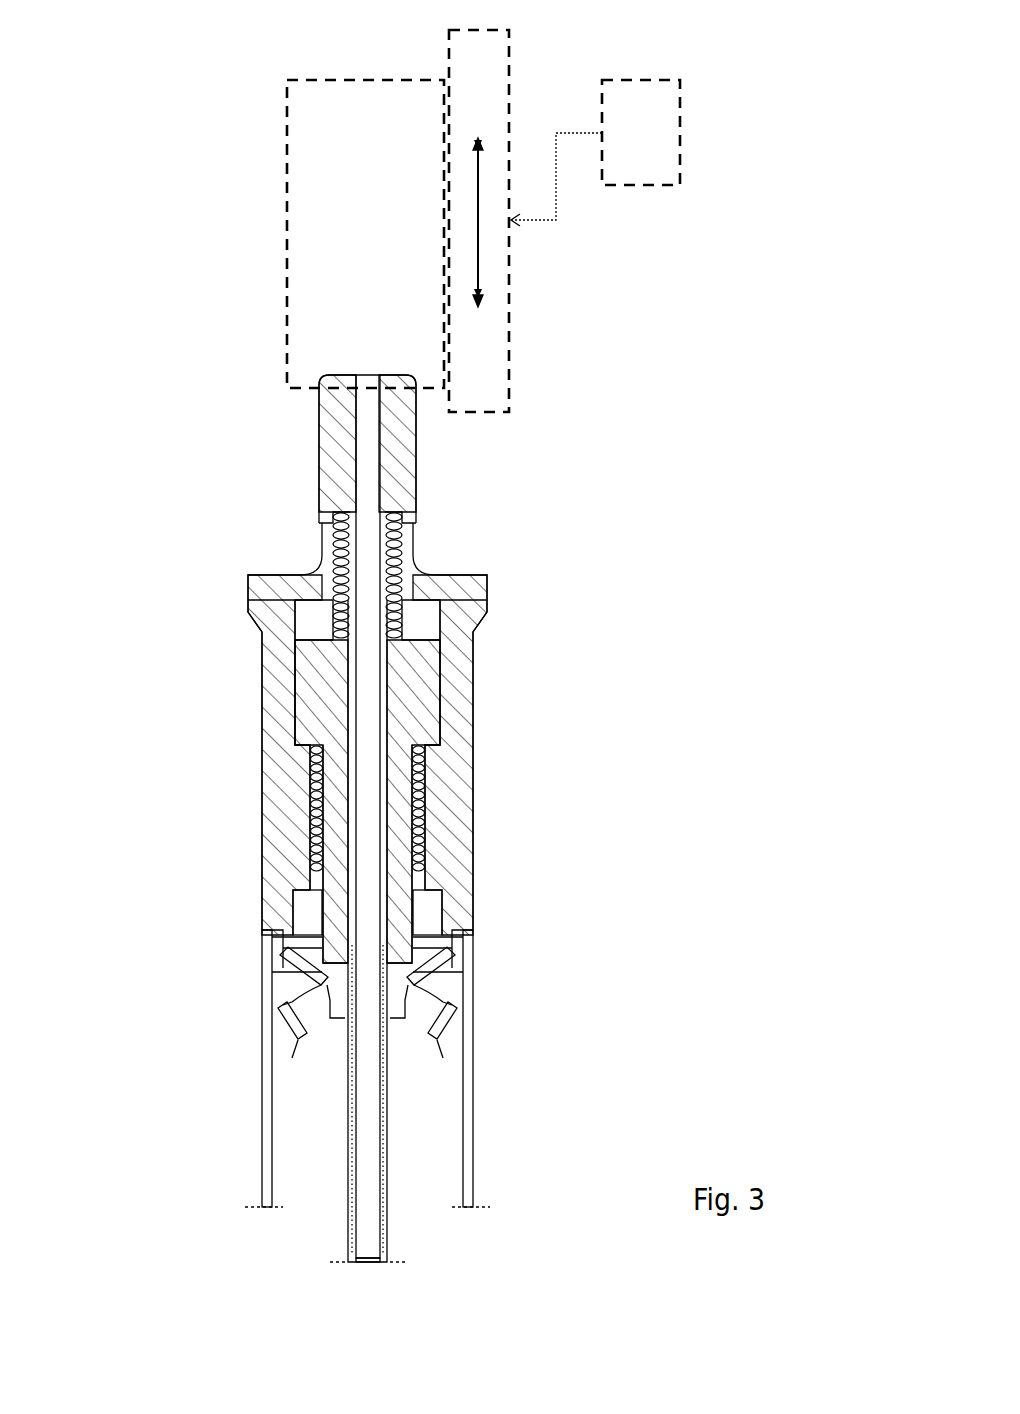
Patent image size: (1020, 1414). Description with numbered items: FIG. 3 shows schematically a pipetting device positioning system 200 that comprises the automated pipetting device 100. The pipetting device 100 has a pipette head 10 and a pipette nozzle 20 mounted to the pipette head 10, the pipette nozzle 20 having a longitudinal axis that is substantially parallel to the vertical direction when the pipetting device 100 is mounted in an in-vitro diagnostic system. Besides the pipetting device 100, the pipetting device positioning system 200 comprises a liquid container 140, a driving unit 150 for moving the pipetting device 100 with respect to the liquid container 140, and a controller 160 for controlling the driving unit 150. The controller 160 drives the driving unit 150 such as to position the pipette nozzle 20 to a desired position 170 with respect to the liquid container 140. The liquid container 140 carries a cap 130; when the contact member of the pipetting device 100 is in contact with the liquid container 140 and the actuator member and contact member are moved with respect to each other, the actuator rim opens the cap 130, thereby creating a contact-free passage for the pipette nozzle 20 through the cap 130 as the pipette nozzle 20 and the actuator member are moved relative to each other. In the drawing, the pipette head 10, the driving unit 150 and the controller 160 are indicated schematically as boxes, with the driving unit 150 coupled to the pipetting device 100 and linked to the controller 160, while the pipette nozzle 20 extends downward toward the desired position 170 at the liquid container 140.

The pipetting device positioning system 200 is at (168, 108).
The pipette head 10 is at (352, 142).
The driving unit 150 is at (510, 322).
The controller 160 is at (681, 157).
The automated pipetting device 100 is at (227, 510).
The pipette nozzle 20 is at (388, 1205).
The cap 130 is at (298, 1040).
The liquid container 140 is at (262, 1150).
The desired position 170 is at (330, 1262).